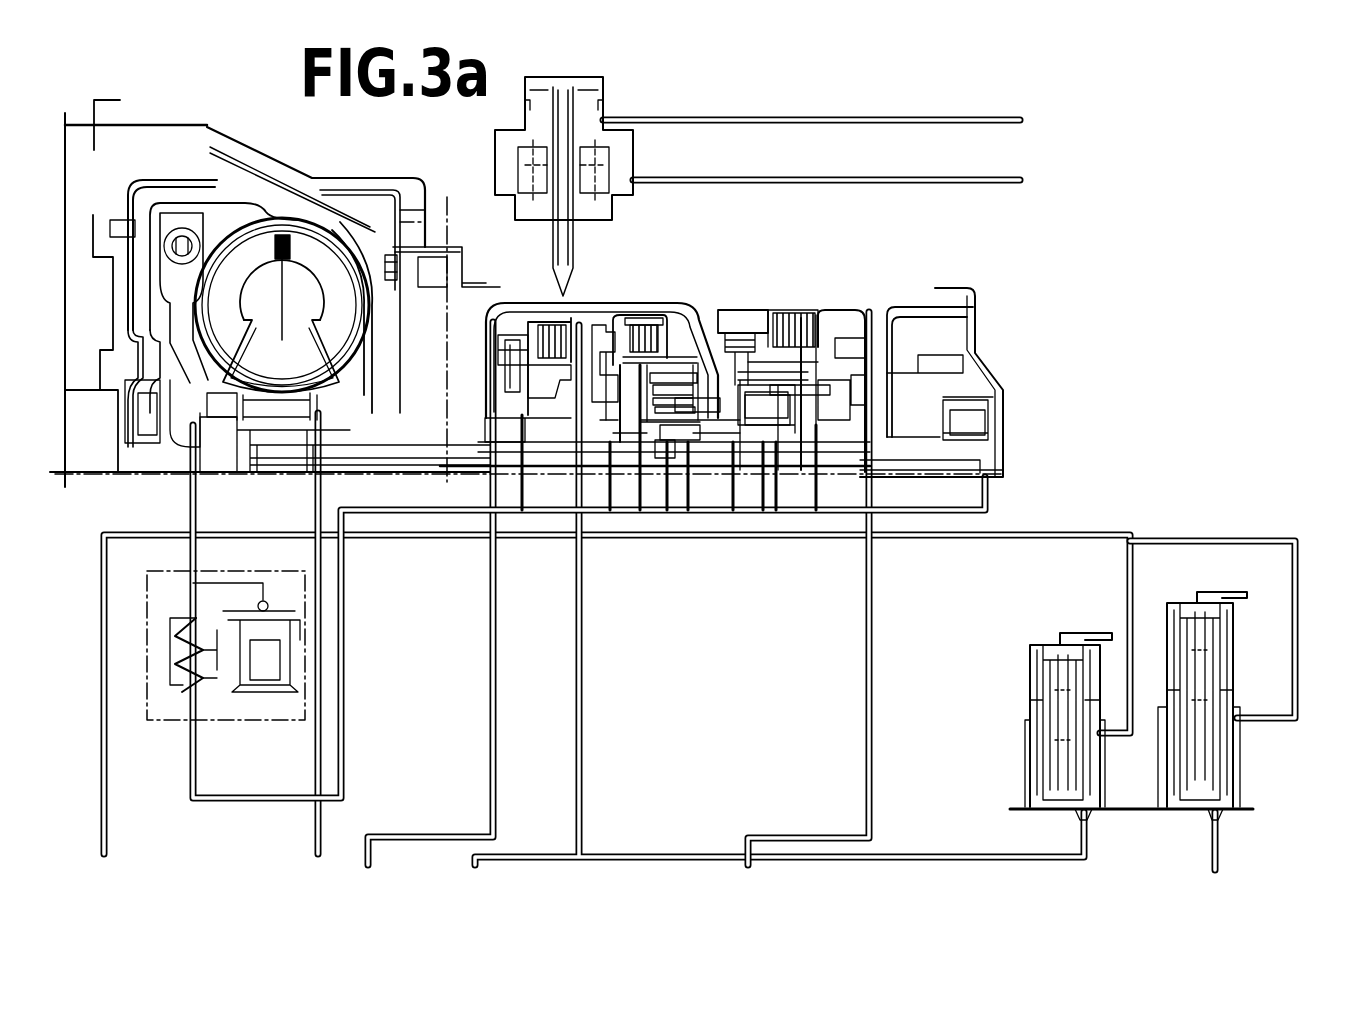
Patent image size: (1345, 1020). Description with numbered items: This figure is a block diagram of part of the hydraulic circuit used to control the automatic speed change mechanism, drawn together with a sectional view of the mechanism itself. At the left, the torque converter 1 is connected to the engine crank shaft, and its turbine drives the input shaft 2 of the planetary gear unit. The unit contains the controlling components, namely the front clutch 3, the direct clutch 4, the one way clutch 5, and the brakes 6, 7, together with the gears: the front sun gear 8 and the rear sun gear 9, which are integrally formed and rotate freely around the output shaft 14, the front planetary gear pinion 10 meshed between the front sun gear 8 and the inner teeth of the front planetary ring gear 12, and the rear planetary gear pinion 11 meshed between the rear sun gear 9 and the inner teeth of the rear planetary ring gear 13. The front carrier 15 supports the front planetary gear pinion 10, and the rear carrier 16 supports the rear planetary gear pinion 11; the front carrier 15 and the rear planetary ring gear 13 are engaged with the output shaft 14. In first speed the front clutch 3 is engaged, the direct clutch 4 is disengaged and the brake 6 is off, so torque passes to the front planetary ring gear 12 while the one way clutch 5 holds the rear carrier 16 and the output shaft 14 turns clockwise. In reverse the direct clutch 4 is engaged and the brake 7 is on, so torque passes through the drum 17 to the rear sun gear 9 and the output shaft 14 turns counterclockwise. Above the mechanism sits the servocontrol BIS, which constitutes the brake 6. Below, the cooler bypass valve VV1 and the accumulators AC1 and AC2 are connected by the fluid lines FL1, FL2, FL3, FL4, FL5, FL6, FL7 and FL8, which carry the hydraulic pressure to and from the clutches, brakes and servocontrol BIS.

The torque converter 1 is at (310, 232).
The input shaft 2 is at (366, 458).
The front clutch 3 is at (645, 320).
The direct clutch 4 is at (540, 322).
The one way clutch 5 is at (743, 318).
The brake 6 is at (563, 322).
The brake 7 is at (796, 312).
The front sun gear 8 is at (672, 428).
The rear sun gear 9 is at (768, 435).
The front planetary gear pinion 10 is at (680, 412).
The rear planetary gear pinion 11 is at (782, 430).
The front planetary ring gear 12 is at (690, 315).
The rear planetary ring gear 13 is at (833, 328).
The output shaft 14 is at (927, 437).
The front carrier 15 is at (658, 445).
The rear carrier 16 is at (778, 312).
The drum 17 is at (596, 325).
The servocontrol BIS is at (601, 183).
The cooler bypass valve VV1 is at (165, 722).
The accumulator AC1 is at (1032, 707).
The accumulator AC2 is at (1230, 653).
The fluid line FL1 is at (608, 716).
The fluid line FL2 is at (314, 655).
The fluid line FL3 is at (430, 609).
The fluid line FL4 is at (773, 615).
The fluid line FL5 is at (799, 608).
The fluid line FL6 is at (1222, 858).
The fluid line FL7 is at (845, 124).
The fluid line FL8 is at (860, 185).